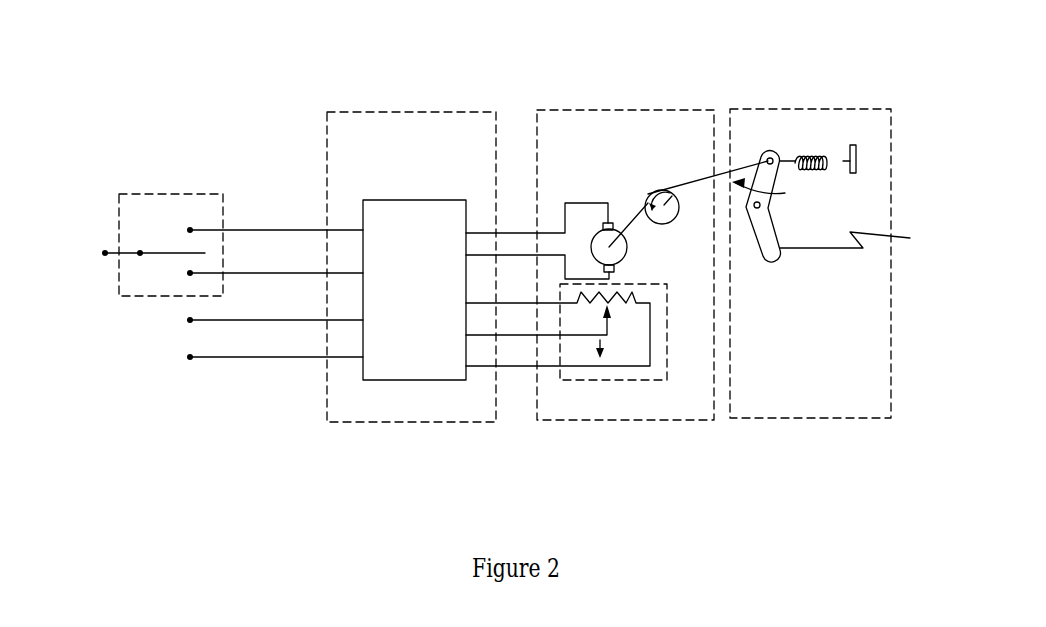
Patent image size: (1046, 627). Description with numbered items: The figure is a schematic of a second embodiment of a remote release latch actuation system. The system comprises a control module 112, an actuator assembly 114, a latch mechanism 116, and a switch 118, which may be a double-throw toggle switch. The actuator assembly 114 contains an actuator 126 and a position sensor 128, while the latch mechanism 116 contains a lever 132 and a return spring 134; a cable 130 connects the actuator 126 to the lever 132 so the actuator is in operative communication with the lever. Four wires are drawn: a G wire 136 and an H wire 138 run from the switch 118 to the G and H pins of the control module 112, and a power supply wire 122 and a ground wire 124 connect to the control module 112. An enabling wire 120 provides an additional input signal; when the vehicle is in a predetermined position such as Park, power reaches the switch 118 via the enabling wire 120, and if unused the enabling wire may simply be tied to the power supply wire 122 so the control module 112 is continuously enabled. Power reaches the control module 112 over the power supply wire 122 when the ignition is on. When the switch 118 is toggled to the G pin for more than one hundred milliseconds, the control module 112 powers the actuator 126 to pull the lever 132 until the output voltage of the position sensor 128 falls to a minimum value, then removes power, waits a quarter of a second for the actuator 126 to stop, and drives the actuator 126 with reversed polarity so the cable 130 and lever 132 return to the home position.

The control module 112 is at (395, 112).
The actuator assembly 114 is at (600, 110).
The latch mechanism 116 is at (808, 109).
The switch 118 is at (152, 194).
The enabling wire 120 is at (105, 252).
The power supply wire 122 is at (190, 320).
The ground wire 124 is at (190, 357).
The actuator 126 is at (598, 234).
The position sensor 128 is at (608, 380).
The cable 130 is at (719, 170).
The lever 132 is at (861, 240).
The return spring 134 is at (825, 155).
The G wire 136 is at (247, 230).
The H wire 138 is at (300, 273).